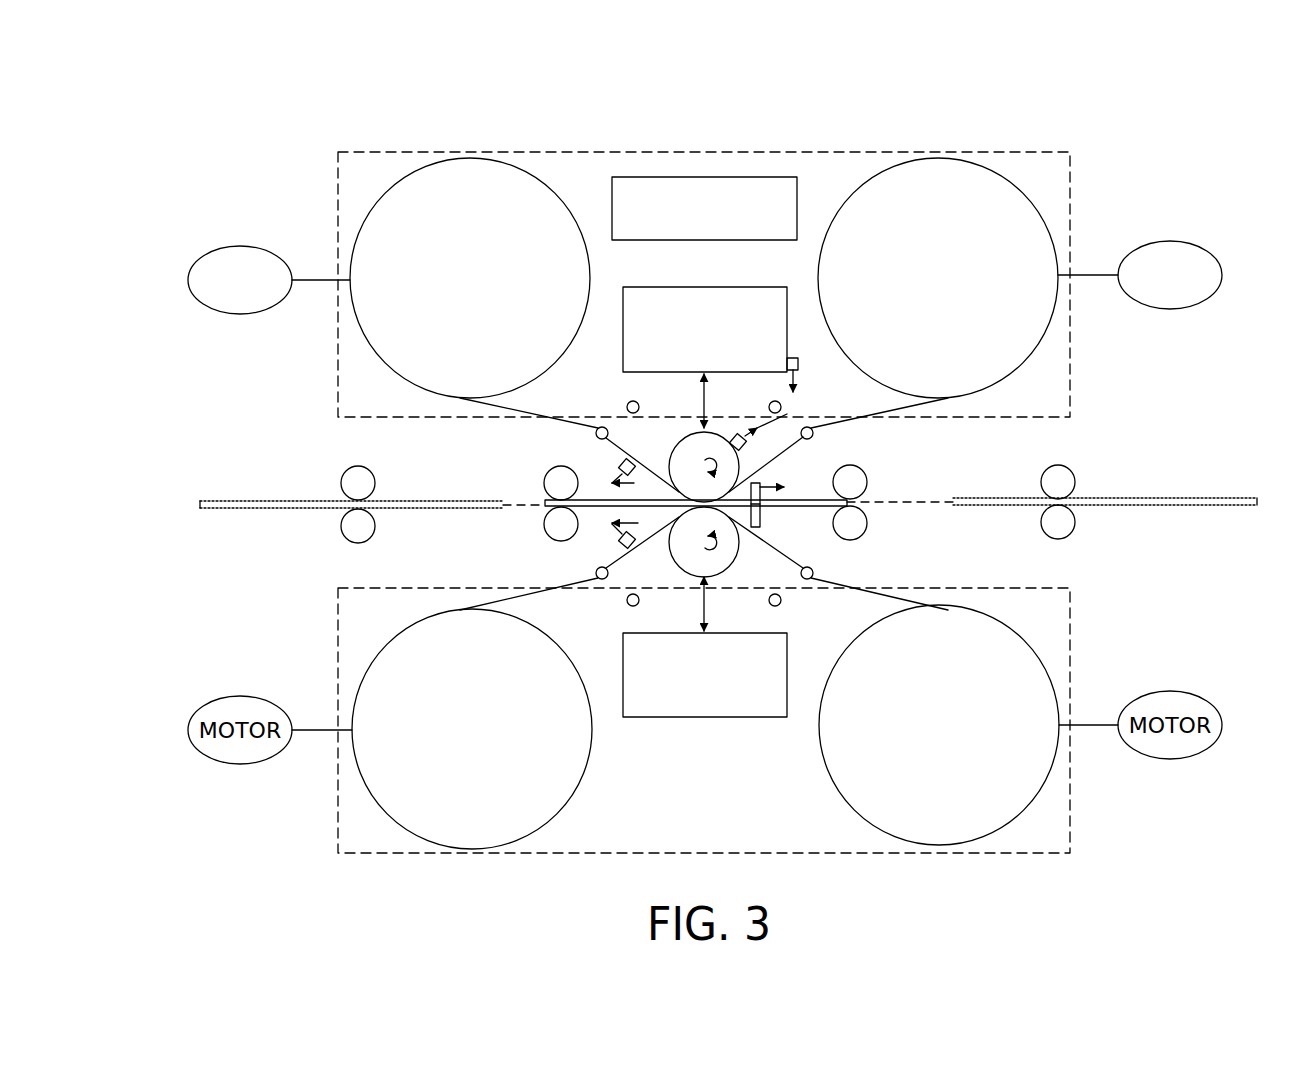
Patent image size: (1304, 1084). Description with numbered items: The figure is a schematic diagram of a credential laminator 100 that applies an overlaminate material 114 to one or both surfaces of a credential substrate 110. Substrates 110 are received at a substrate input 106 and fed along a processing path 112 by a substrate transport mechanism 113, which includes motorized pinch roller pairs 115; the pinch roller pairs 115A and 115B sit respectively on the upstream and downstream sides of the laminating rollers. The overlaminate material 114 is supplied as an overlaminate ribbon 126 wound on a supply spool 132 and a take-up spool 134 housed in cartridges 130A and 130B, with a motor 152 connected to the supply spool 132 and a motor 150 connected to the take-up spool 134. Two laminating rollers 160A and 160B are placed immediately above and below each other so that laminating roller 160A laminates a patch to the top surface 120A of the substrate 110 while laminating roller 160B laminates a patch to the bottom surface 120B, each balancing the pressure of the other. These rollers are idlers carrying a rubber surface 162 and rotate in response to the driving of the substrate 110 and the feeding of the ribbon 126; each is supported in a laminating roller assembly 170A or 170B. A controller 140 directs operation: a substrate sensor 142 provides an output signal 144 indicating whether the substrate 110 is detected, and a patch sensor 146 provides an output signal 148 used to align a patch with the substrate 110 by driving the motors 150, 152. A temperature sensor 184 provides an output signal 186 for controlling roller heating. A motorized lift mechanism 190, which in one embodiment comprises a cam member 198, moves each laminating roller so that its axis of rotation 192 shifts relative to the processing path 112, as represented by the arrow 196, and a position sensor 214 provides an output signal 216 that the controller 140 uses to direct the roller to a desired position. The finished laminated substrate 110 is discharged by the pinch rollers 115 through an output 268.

The laminator 100 is at (1179, 99).
The substrate input 106 is at (1088, 470).
The credential substrate 110 is at (216, 490).
The processing path 112 is at (898, 500).
The substrate transport mechanism 113 is at (1073, 548).
The overlaminate material 114 is at (867, 413).
The motorized pinch roller pairs 115 is at (376, 466).
The upstream pinch roller pair 115A is at (863, 457).
The downstream pinch roller pair 115B is at (542, 539).
The top surface 120A is at (559, 499).
The bottom surface 120B is at (840, 511).
The overlaminate ribbon 126 is at (530, 410).
The cartridge 130A is at (1065, 177).
The cartridge 130B is at (1054, 808).
The supply spool 132 is at (955, 173).
The take-up spool 134 is at (425, 180).
The controller 140 is at (700, 178).
The substrate sensor 142 is at (762, 480).
The output signal 144 is at (786, 487).
The patch sensor 146 is at (621, 463).
The output signal 148 is at (644, 521).
The motor 150 is at (230, 248).
The motor 152 is at (1182, 242).
The laminating roller 160A is at (684, 460).
The laminating roller 160B is at (724, 547).
The rubber surface 162 is at (721, 429).
The laminating roller assembly 170A is at (805, 297).
The laminating roller assembly 170B is at (597, 661).
The temperature sensor 184 is at (758, 445).
The output signal 186 is at (787, 414).
The motorized lift mechanism 190 is at (672, 288).
The axis of rotation 192 is at (702, 504).
The arrow 196 is at (701, 394).
The cam member 198 is at (642, 482).
The position sensor 214 is at (797, 358).
The output signal 216 is at (796, 382).
The output 268 is at (312, 485).